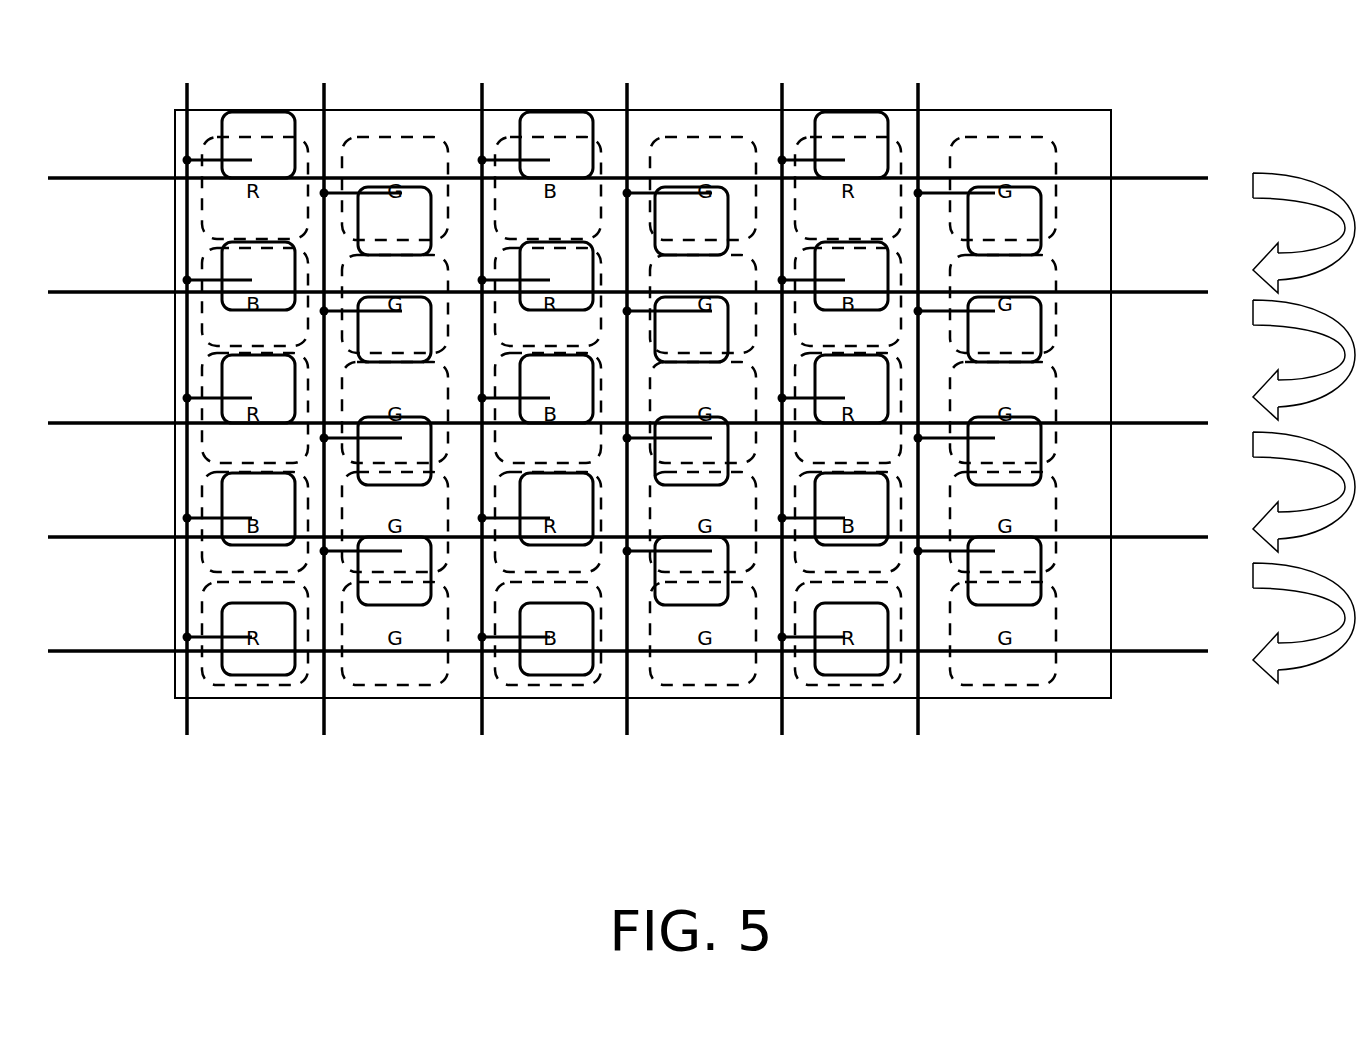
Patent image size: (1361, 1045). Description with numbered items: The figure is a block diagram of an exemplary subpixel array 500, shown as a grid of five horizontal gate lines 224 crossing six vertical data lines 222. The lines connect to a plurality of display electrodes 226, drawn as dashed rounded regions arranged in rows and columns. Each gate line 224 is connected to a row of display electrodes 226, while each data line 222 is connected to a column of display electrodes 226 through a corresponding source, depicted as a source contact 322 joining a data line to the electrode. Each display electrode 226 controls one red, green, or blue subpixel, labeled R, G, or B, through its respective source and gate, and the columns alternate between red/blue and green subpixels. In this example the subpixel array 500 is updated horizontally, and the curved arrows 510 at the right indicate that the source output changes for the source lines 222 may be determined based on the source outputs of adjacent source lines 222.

The subpixel array 500 is at (665, 882).
The data line 222 is at (187, 103).
The gate line 224 is at (1140, 178).
The display electrode 226 is at (308, 163).
The source contact 322 is at (415, 190).
The arrows 510 is at (1282, 173).